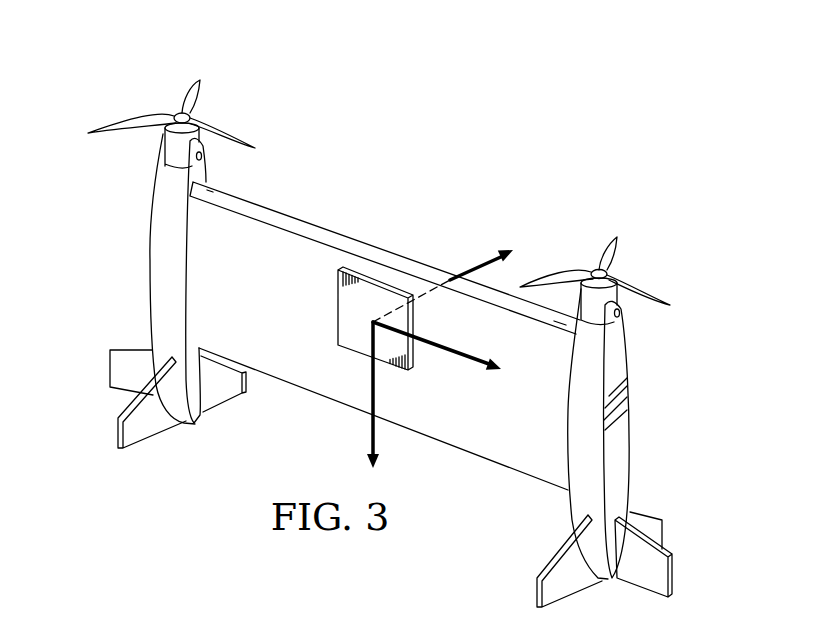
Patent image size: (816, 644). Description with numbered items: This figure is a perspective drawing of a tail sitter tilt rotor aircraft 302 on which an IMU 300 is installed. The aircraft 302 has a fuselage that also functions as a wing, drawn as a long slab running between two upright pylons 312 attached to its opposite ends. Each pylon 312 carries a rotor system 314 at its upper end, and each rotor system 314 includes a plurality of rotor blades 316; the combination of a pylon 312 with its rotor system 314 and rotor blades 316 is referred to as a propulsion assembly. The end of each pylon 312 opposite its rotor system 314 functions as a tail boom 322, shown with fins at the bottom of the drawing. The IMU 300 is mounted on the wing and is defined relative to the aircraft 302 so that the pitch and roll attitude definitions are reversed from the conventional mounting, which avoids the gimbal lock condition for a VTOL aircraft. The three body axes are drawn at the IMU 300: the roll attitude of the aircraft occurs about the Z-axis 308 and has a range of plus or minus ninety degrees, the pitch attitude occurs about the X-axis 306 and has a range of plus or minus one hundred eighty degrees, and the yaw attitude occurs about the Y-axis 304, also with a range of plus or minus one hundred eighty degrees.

The IMU 300 is at (356, 262).
The aircraft 302 is at (429, 176).
The Y-axis 304 is at (370, 378).
The X-axis 306 is at (452, 357).
The Z-axis 308 is at (473, 267).
The pylon 312 is at (160, 227).
The rotor system 314 is at (209, 109).
The rotor blades 316 is at (195, 88).
The tail boom 322 is at (100, 414).